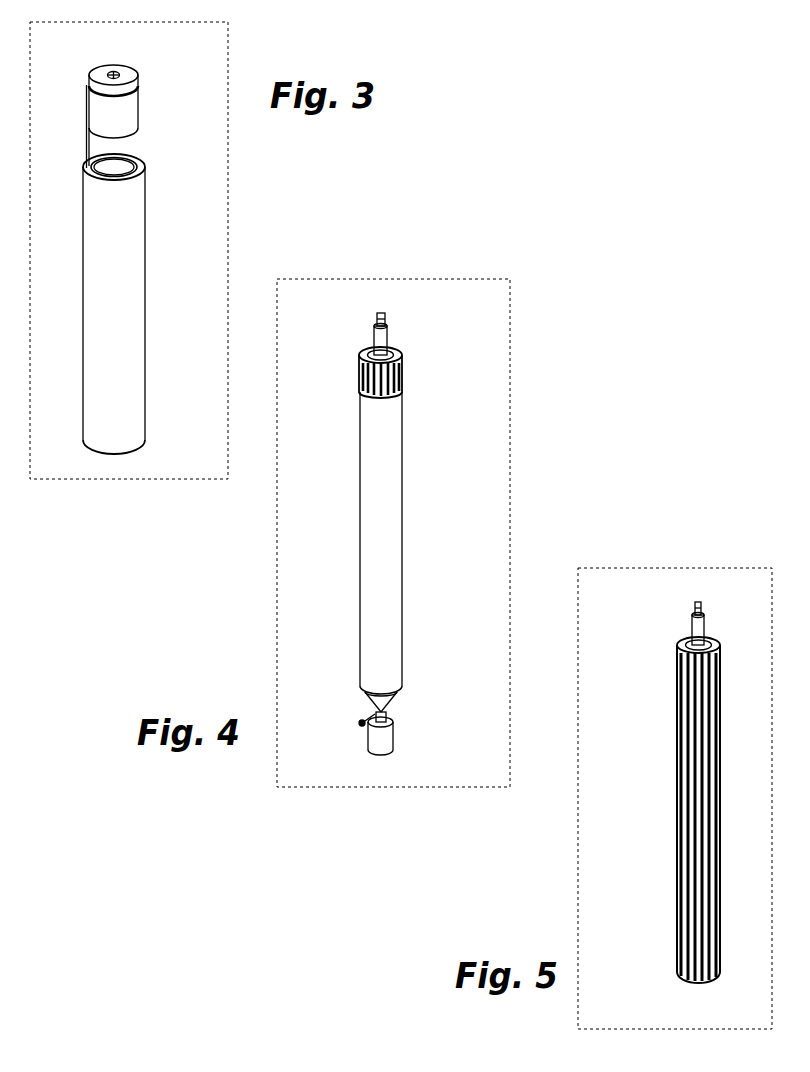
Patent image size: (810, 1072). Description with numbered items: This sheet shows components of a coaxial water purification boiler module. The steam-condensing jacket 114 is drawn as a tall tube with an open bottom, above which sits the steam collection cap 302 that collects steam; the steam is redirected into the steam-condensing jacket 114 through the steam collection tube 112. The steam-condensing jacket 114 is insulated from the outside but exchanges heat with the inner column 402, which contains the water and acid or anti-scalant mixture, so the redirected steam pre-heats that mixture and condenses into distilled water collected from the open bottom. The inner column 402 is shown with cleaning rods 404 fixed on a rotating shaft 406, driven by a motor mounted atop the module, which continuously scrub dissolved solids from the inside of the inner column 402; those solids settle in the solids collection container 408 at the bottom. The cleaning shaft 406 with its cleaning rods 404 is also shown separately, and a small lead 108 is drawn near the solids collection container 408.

In FIG. 3, the steam-condensing jacket 114 is at (168, 240).
In FIG. 3, the steam collection tube 112 is at (87, 138).
In FIG. 3, the steam collection cap 302 is at (122, 100).
In FIG. 4, the inner column 402 is at (418, 513).
In FIG. 4, the cleaning rods 404 is at (358, 373).
In FIG. 5, the cleaning rods 404 is at (666, 776).
In FIG. 4, the rotating shaft 406 is at (380, 337).
In FIG. 5, the rotating shaft 406 is at (697, 623).
In FIG. 4, the solids collection container 408 is at (385, 735).
In FIG. 4, the wire lead 108 is at (360, 723).